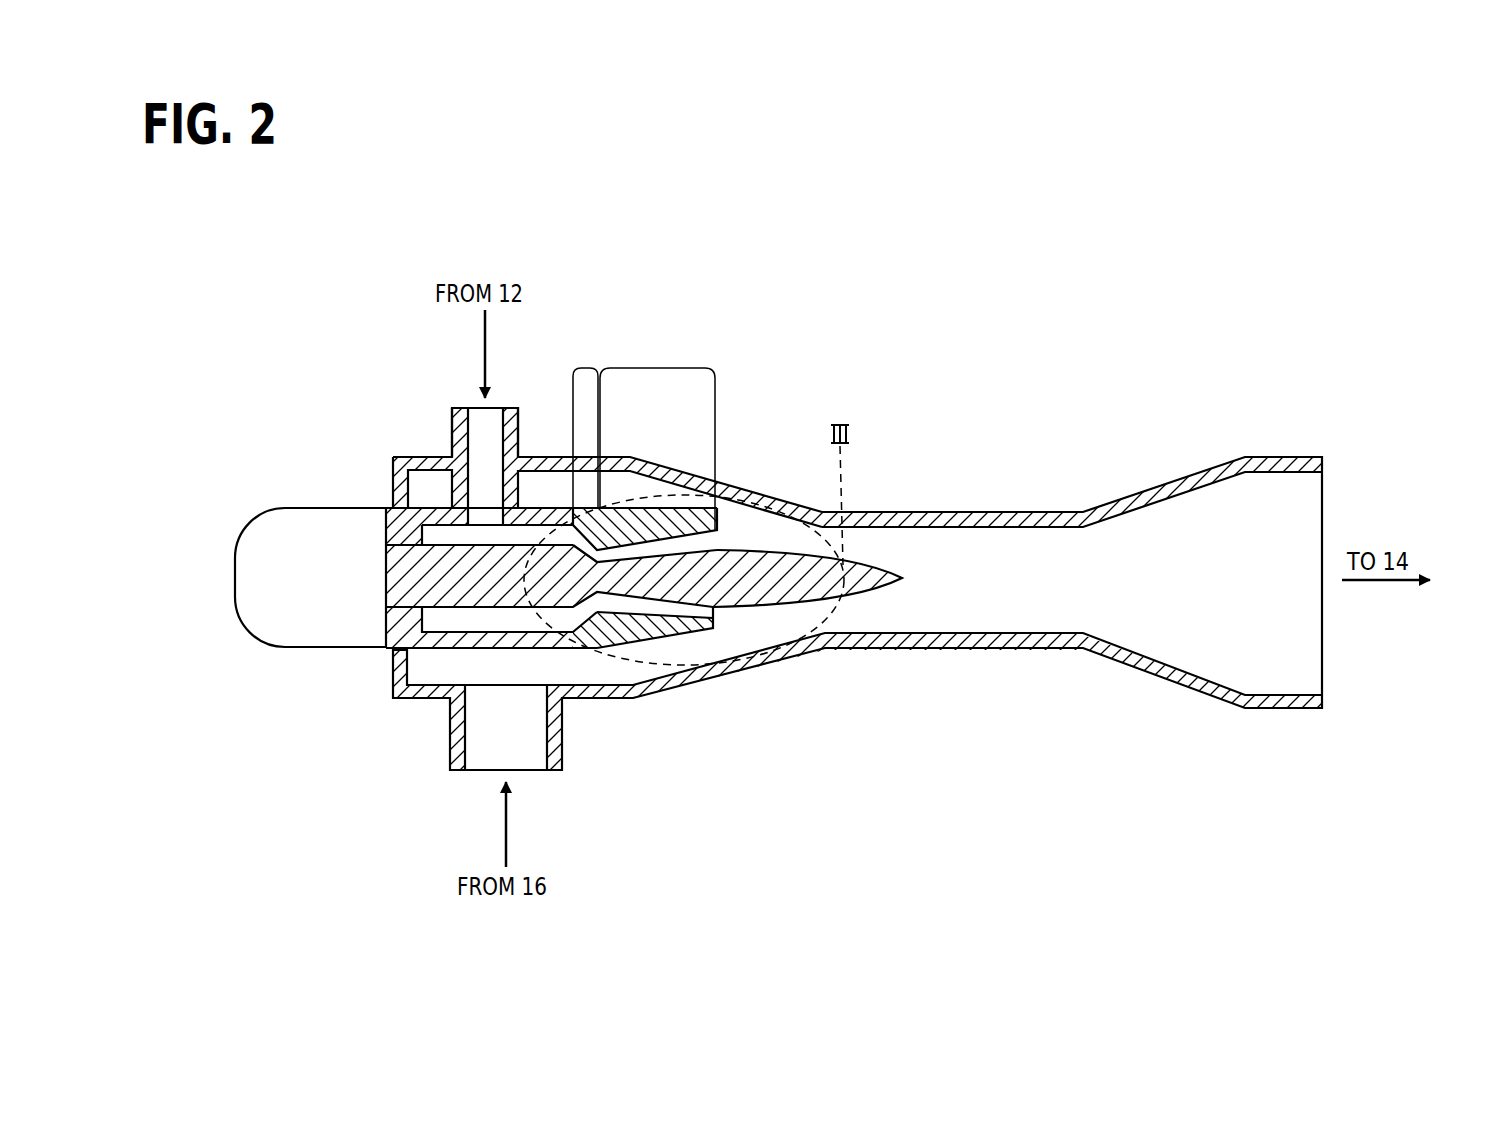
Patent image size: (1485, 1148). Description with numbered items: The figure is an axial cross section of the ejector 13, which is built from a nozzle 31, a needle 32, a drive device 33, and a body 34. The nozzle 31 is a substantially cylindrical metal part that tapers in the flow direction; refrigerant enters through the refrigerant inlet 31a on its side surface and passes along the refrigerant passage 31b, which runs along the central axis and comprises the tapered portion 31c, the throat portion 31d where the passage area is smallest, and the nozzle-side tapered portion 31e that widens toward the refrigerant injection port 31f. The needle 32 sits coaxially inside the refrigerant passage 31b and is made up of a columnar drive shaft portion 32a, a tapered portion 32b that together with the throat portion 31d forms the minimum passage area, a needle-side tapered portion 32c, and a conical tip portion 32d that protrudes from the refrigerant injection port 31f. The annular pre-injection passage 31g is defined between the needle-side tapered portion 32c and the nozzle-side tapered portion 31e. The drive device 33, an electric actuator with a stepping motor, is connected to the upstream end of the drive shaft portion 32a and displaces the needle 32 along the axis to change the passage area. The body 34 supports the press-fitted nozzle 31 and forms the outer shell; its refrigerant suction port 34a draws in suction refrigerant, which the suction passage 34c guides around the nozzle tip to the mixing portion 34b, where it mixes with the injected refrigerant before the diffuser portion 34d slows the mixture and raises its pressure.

The ejector 13 is at (1083, 487).
The nozzle 31 is at (428, 513).
The refrigerant inlet 31a is at (468, 408).
The refrigerant passage 31b is at (540, 535).
The tapered portion 31c is at (583, 368).
The throat portion 31d is at (605, 512).
The nozzle-side tapered portion 31e is at (656, 368).
The refrigerant injection port 31f is at (717, 533).
The pre-injection passage 31g is at (682, 547).
The needle 32 is at (767, 607).
The drive shaft portion 32a is at (443, 583).
The tapered portion 32b is at (593, 592).
The needle-side tapered portion 32c is at (705, 620).
The tip portion 32d is at (837, 599).
The drive device 33 is at (280, 527).
The body 34 is at (952, 518).
The refrigerant suction port 34a is at (467, 773).
The mixing portion 34b is at (980, 603).
The suction passage 34c is at (682, 648).
The diffuser portion 34d is at (1190, 606).